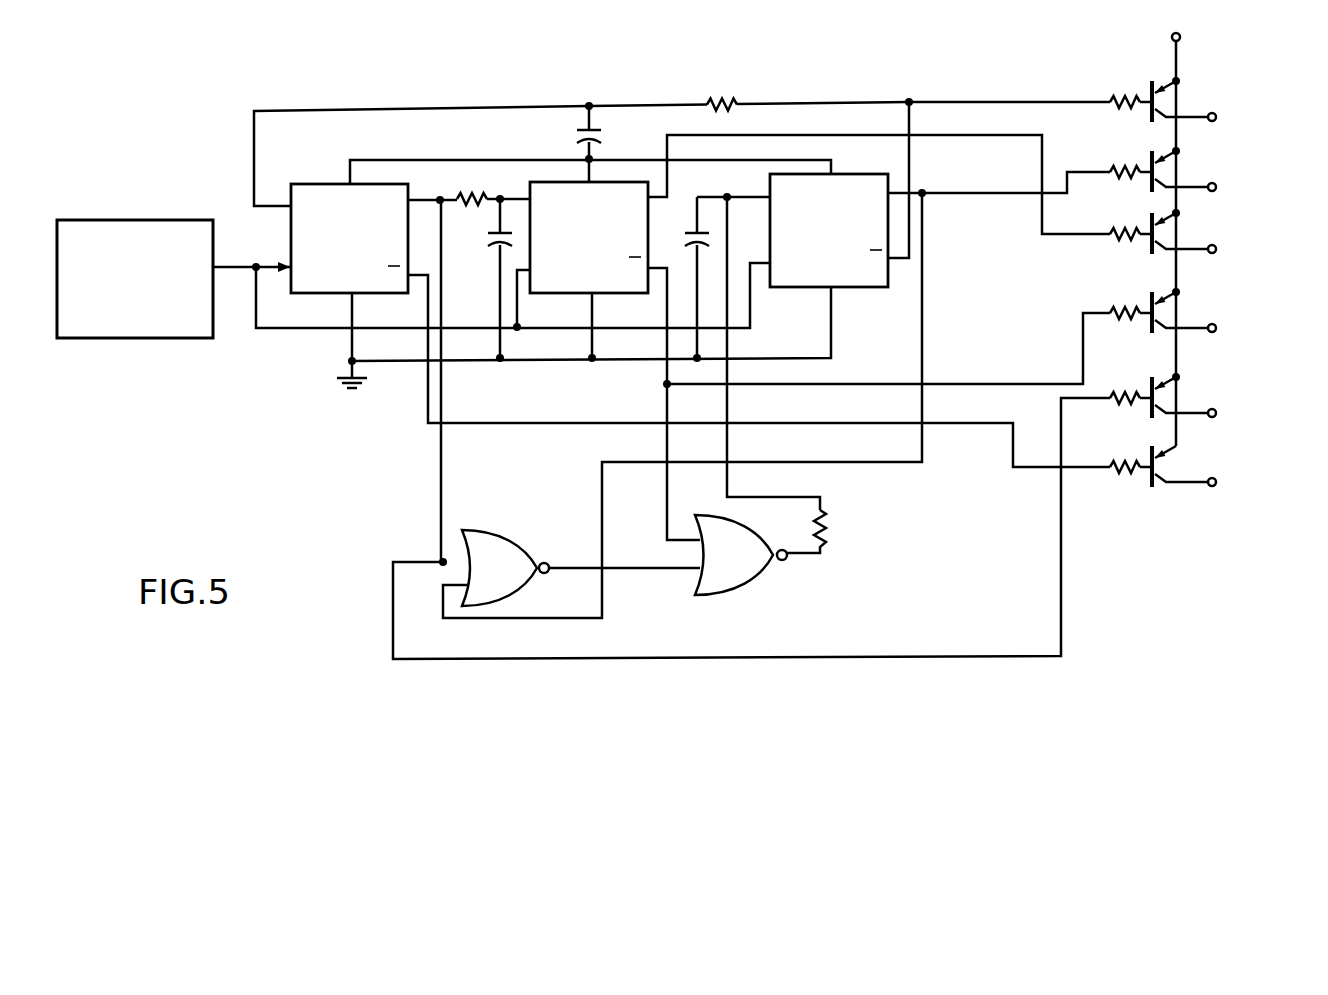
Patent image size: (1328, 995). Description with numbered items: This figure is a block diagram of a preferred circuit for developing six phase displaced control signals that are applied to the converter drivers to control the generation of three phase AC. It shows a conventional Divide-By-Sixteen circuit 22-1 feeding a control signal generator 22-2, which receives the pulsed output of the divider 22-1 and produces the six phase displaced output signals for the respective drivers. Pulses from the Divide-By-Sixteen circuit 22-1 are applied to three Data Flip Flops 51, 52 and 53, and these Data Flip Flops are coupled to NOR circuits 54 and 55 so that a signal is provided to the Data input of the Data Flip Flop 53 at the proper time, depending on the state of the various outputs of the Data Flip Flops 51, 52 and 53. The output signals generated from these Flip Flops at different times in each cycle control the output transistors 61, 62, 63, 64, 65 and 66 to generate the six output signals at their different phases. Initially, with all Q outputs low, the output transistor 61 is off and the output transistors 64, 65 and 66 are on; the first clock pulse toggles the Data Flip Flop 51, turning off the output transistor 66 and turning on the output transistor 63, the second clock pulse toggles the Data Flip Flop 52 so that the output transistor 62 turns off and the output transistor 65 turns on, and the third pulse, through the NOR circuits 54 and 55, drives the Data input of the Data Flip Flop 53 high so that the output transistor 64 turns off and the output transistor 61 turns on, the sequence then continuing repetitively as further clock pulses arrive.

The Divide-By-Sixteen circuit 22-1 is at (177, 220).
The control signal generator 22-2 is at (322, 354).
The Data Flip Flop 51 is at (320, 184).
The Data Flip Flop 52 is at (552, 182).
The Data Flip Flop 53 is at (884, 174).
The NOR circuit 54 is at (521, 548).
The NOR circuit 55 is at (753, 578).
The output transistor 61 is at (1150, 93).
The output transistor 62 is at (1150, 228).
The output transistor 63 is at (1150, 460).
The output transistor 64 is at (1150, 163).
The output transistor 65 is at (1150, 306).
The output transistor 66 is at (1150, 391).